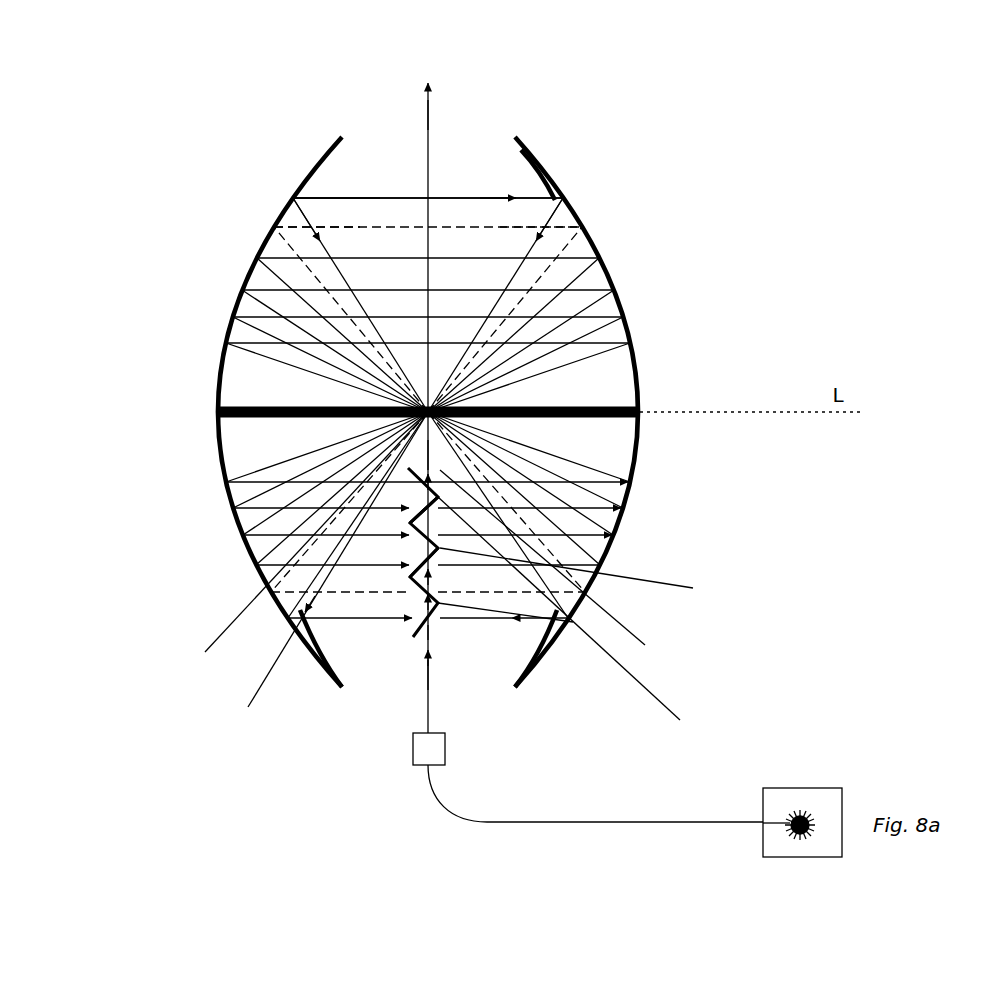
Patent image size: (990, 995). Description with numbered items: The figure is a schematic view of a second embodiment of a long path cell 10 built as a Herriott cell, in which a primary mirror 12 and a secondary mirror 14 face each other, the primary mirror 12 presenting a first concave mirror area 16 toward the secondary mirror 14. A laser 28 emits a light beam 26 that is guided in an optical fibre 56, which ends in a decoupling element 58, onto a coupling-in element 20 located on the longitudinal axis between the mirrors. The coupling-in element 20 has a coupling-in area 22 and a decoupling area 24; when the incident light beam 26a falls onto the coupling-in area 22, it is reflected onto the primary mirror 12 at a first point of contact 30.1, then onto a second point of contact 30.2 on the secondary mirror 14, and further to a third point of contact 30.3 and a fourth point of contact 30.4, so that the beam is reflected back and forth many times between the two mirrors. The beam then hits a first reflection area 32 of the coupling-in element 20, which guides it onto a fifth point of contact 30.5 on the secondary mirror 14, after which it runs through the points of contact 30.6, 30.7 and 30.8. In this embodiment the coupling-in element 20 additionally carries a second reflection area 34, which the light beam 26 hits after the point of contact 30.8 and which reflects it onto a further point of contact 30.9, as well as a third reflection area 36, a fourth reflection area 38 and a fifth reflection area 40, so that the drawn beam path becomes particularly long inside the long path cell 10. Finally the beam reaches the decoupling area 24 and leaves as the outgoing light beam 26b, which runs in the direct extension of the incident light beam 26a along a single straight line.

The long path cell 10 is at (722, 163).
The primary mirror 12 is at (553, 178).
The secondary mirror 14 is at (314, 160).
The first concave mirror area 16 is at (528, 171).
The coupling-in element 20 is at (411, 601).
The coupling-in area 22 is at (436, 627).
The decoupling area 24 is at (437, 477).
The light beam 26 is at (427, 702).
The incident light beam 26a is at (430, 675).
The outgoing light beam 26b is at (430, 115).
The laser 28 is at (794, 788).
The first point of contact 30.1 is at (588, 617).
The second point of contact 30.2 is at (291, 198).
The third point of contact 30.3 is at (570, 197).
The fourth point of contact 30.4 is at (325, 574).
The fifth point of contact 30.5 is at (300, 542).
The sixth point of contact 30.6 is at (587, 229).
The seventh point of contact 30.7 is at (272, 228).
The eighth point of contact 30.8 is at (563, 568).
The ninth point of contact 30.9 is at (597, 575).
The first reflection area 32 is at (350, 643).
The second reflection area 34 is at (538, 658).
The third reflection area 36 is at (409, 557).
The fourth reflection area 38 is at (449, 519).
The fifth reflection area 40 is at (409, 500).
The optical fibre 56 is at (607, 822).
The decoupling element 58 is at (445, 748).